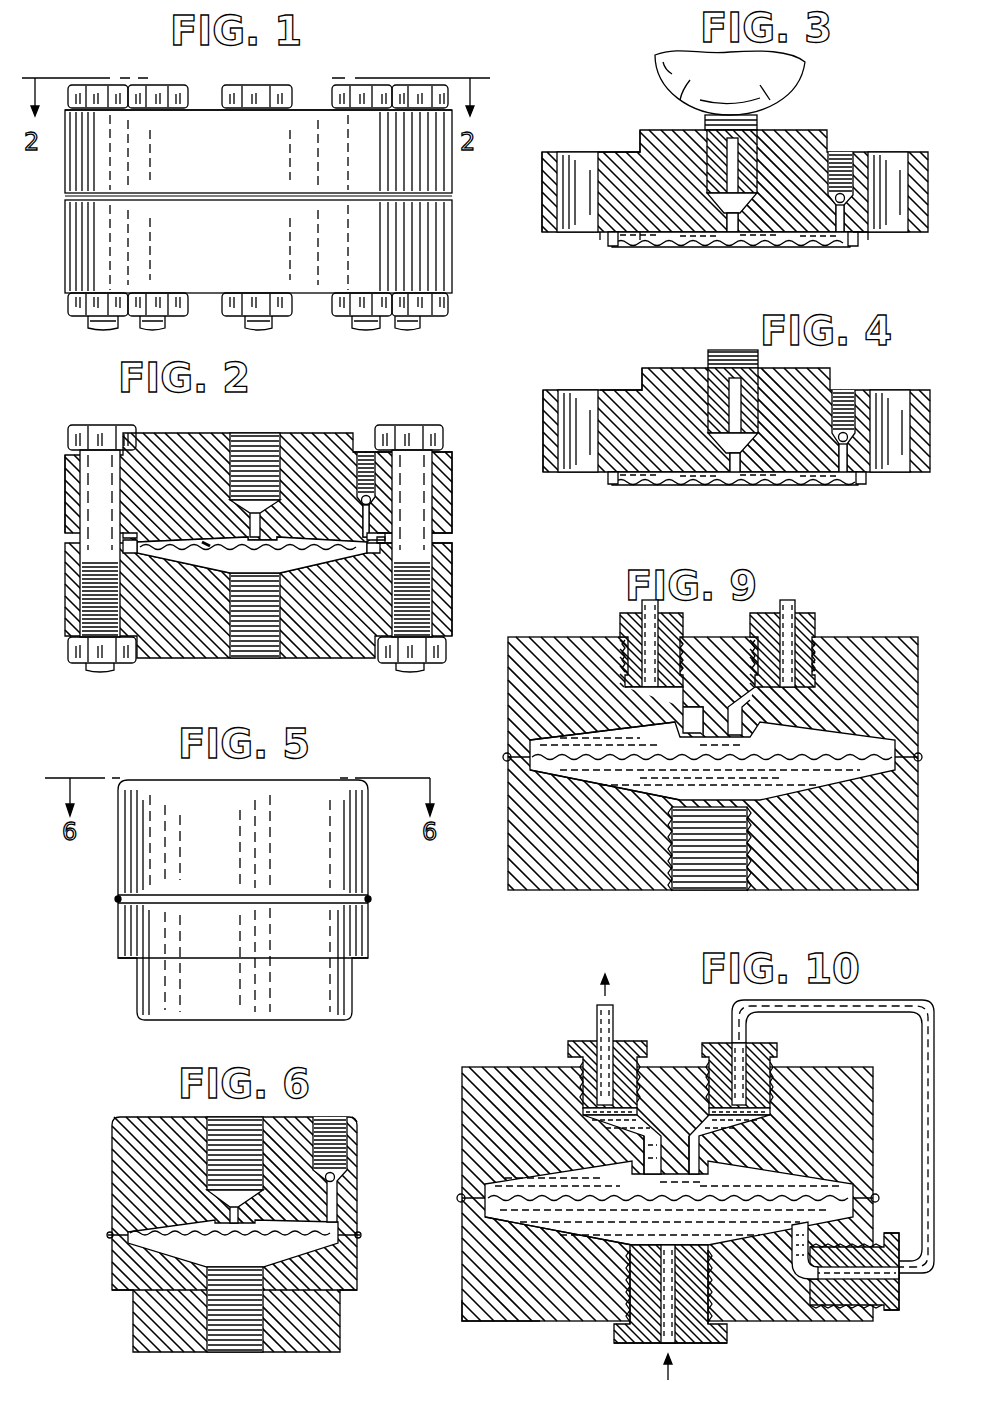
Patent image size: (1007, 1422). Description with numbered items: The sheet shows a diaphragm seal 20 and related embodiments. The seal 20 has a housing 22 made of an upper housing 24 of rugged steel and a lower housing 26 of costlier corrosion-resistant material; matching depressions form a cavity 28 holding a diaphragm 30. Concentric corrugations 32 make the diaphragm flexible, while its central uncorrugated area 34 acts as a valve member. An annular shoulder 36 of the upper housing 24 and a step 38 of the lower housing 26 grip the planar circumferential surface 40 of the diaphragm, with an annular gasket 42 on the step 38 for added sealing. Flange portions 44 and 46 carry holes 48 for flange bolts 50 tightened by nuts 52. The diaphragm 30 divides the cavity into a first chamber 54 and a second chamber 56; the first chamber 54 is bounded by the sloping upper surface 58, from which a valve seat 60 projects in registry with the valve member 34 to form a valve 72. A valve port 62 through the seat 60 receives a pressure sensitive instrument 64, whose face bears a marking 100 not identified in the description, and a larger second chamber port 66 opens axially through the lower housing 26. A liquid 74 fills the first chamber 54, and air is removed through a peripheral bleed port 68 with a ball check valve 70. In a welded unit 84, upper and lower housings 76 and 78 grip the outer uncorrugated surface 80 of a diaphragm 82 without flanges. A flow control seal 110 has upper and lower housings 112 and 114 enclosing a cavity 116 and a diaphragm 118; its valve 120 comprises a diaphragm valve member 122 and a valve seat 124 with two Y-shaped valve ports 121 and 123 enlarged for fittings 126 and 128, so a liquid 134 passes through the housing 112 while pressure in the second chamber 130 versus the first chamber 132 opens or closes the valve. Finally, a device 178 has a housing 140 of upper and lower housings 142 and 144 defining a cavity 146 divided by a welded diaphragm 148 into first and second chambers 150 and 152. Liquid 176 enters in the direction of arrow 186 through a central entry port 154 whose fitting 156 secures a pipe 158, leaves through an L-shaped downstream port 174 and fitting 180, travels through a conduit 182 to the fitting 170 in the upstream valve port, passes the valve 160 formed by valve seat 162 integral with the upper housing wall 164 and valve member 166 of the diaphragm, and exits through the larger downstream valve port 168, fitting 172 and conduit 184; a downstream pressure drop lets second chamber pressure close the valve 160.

In FIG. 1, the diaphragm seal 20 is at (458, 58).
In FIG. 2, the diaphragm seal 20 is at (462, 457).
In FIG. 3, the diaphragm seal 20 is at (532, 155).
In FIG. 4, the diaphragm seal 20 is at (570, 378).
In FIG. 1, the housing 22 is at (240, 201).
In FIG. 2, the housing 22 is at (258, 530).
In FIG. 1, the upper housing 24 is at (228, 169).
In FIG. 2, the upper housing 24 is at (192, 497).
In FIG. 3, the upper housing 24 is at (661, 200).
In FIG. 4, the upper housing 24 is at (661, 430).
In FIG. 1, the lower housing 26 is at (236, 259).
In FIG. 2, the lower housing 26 is at (196, 632).
In FIG. 2, the cavity 28 is at (252, 541).
In FIG. 2, the diaphragm 30 is at (234, 553).
In FIG. 3, the diaphragm 30 is at (672, 250).
In FIG. 4, the diaphragm 30 is at (660, 488).
In FIG. 2, the concentric corrugations 32 is at (330, 548).
In FIG. 3, the concentric corrugations 32 is at (848, 250).
In FIG. 4, the concentric corrugations 32 is at (798, 482).
In FIG. 2, the uncorrugated area 34 is at (250, 550).
In FIG. 3, the uncorrugated area 34 is at (718, 246).
In FIG. 4, the uncorrugated area 34 is at (725, 490).
In FIG. 2, the annular shoulder 36 is at (123, 536).
In FIG. 3, the annular shoulder 36 is at (605, 242).
In FIG. 4, the annular shoulder 36 is at (610, 480).
In FIG. 2, the step 38 is at (125, 548).
In FIG. 3, the uncorrugated circumferential surface 40 is at (612, 243).
In FIG. 2, the annular gasket 42 is at (380, 542).
In FIG. 2, the flange portion 44 is at (448, 452).
In FIG. 3, the flange portion 44 is at (615, 150).
In FIG. 4, the flange portion 44 is at (628, 390).
In FIG. 2, the flange portion 46 is at (448, 646).
In FIG. 2, the holes 48 is at (430, 508).
In FIG. 3, the holes 48 is at (575, 160).
In FIG. 4, the holes 48 is at (570, 400).
In FIG. 1, the flange bolts 50 is at (410, 80).
In FIG. 2, the flange bolts 50 is at (408, 425).
In FIG. 1, the nuts 52 is at (442, 305).
In FIG. 2, the nuts 52 is at (98, 668).
In FIG. 2, the first chamber 54 is at (205, 540).
In FIG. 2, the second chamber 56 is at (193, 560).
In FIG. 3, the upper surface 58 is at (646, 246).
In FIG. 3, the valve seat 60 is at (742, 232).
In FIG. 4, the valve seat 60 is at (742, 470).
In FIG. 2, the valve port 62 is at (255, 515).
In FIG. 3, the valve port 62 is at (718, 238).
In FIG. 4, the valve port 62 is at (733, 415).
In FIG. 6, the valve port 62 is at (230, 1150).
In FIG. 3, the pressure sensitive instrument 64 is at (742, 90).
In FIG. 2, the second chamber port 66 is at (265, 645).
In FIG. 6, the second chamber port 66 is at (245, 1335).
In FIG. 2, the bleed port 68 is at (366, 518).
In FIG. 3, the bleed port 68 is at (880, 232).
In FIG. 6, the bleed port 68 is at (333, 1152).
In FIG. 2, the ball check valve 70 is at (365, 452).
In FIG. 3, the ball check valve 70 is at (845, 150).
In FIG. 4, the ball check valve 70 is at (843, 435).
In FIG. 3, the valve 72 is at (762, 252).
In FIG. 4, the valve 72 is at (718, 478).
In FIG. 3, the liquid 74 is at (842, 230).
In FIG. 4, the liquid 74 is at (762, 483).
In FIG. 5, the upper housing 76 is at (332, 830).
In FIG. 6, the upper housing 76 is at (355, 1188).
In FIG. 5, the lower housing 78 is at (338, 940).
In FIG. 6, the lower housing 78 is at (350, 1268).
In FIG. 6, the outer uncorrugated surface 80 is at (270, 1236).
In FIG. 6, the diaphragm 82 is at (298, 1236).
In FIG. 5, the unit 84 is at (261, 908).
In FIG. 6, the unit 84 is at (262, 1224).
In FIG. 3, the gauge dial mark 100 is at (765, 83).
In FIG. 9, the seal 110 is at (722, 764).
In FIG. 9, the upper housing 112 is at (918, 645).
In FIG. 9, the lower housing 114 is at (920, 862).
In FIG. 9, the cavity 116 is at (545, 775).
In FIG. 9, the diaphragm 118 is at (712, 748).
In FIG. 9, the valve 120 is at (718, 766).
In FIG. 9, the valve port 121 is at (720, 728).
In FIG. 9, the diaphragm valve member 122 is at (640, 735).
In FIG. 9, the valve port 123 is at (690, 680).
In FIG. 9, the valve seat 124 is at (752, 720).
In FIG. 9, the fitting 126 is at (808, 635).
In FIG. 9, the fitting 128 is at (622, 635).
In FIG. 9, the second chamber 130 is at (625, 785).
In FIG. 9, the first chamber 132 is at (535, 745).
In FIG. 9, the liquid 134 is at (702, 776).
In FIG. 10, the housing 140 is at (628, 1195).
In FIG. 10, the upper housing 142 is at (468, 1058).
In FIG. 10, the lower housing 144 is at (462, 1278).
In FIG. 10, the cavity 146 is at (500, 1208).
In FIG. 10, the diaphragm 148 is at (636, 1182).
In FIG. 10, the first chamber 150 is at (667, 1178).
In FIG. 10, the second chamber 152 is at (665, 1223).
In FIG. 10, the entry port 154 is at (640, 1248).
In FIG. 10, the fitting 156 is at (687, 1313).
In FIG. 10, the pipe 158 is at (655, 1340).
In FIG. 9, the valve 160 is at (790, 610).
In FIG. 10, the valve 160 is at (712, 1262).
In FIG. 10, the valve seat 162 is at (700, 1165).
In FIG. 10, the upper housing wall 164 is at (543, 1178).
In FIG. 10, the valve member 166 is at (705, 1132).
In FIG. 10, the downstream valve port 168 is at (640, 1125).
In FIG. 10, the fitting 170 is at (778, 1050).
In FIG. 10, the fitting 172 is at (627, 1044).
In FIG. 10, the second chamber downstream port 174 is at (798, 1270).
In FIG. 10, the liquid 176 is at (680, 1208).
In FIG. 10, the device 178 is at (454, 1283).
In FIG. 10, the fitting 180 is at (890, 1312).
In FIG. 10, the conduit 182 is at (924, 1133).
In FIG. 10, the conduit 184 is at (613, 1028).
In FIG. 10, the arrow 186 is at (678, 1372).